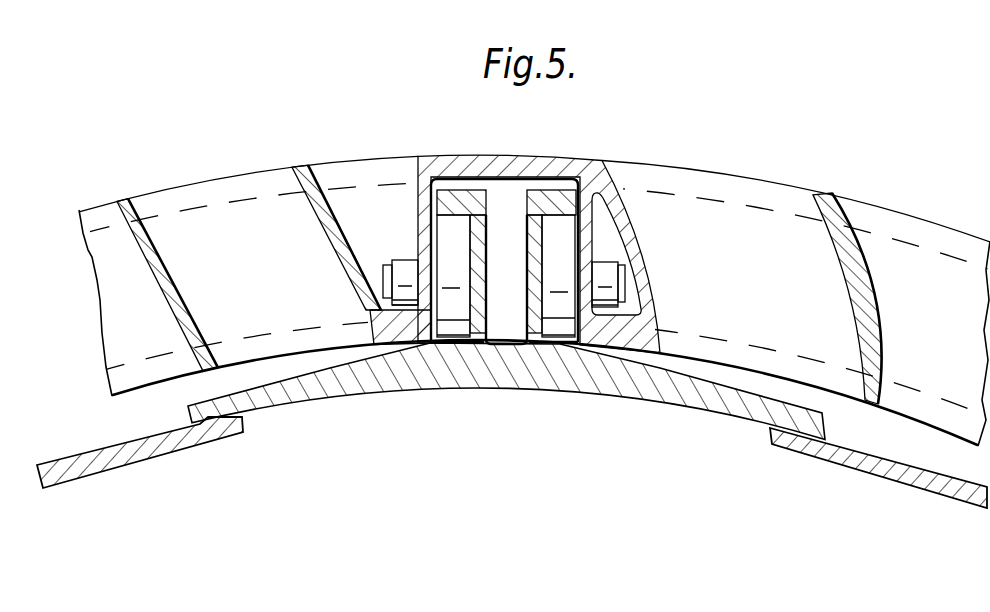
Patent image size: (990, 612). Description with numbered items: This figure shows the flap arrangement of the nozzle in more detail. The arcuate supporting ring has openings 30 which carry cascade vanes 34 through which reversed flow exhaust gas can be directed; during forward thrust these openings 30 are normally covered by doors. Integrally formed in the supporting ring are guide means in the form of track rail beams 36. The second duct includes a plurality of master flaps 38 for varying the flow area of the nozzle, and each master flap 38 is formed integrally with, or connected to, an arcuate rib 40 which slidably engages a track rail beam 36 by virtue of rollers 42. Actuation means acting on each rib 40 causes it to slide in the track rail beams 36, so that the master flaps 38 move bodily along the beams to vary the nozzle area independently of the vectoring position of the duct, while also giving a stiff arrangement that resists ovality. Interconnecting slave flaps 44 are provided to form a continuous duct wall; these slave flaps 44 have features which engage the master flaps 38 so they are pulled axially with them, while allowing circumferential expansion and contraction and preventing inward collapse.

The opening 30 is at (203, 228).
The cascade vane 34 is at (326, 190).
The track rail beam 36 is at (505, 197).
The master flap 38 is at (425, 378).
The arcuate rib 40 is at (557, 203).
The roller 42 is at (562, 248).
The slave flap 44 is at (156, 443).